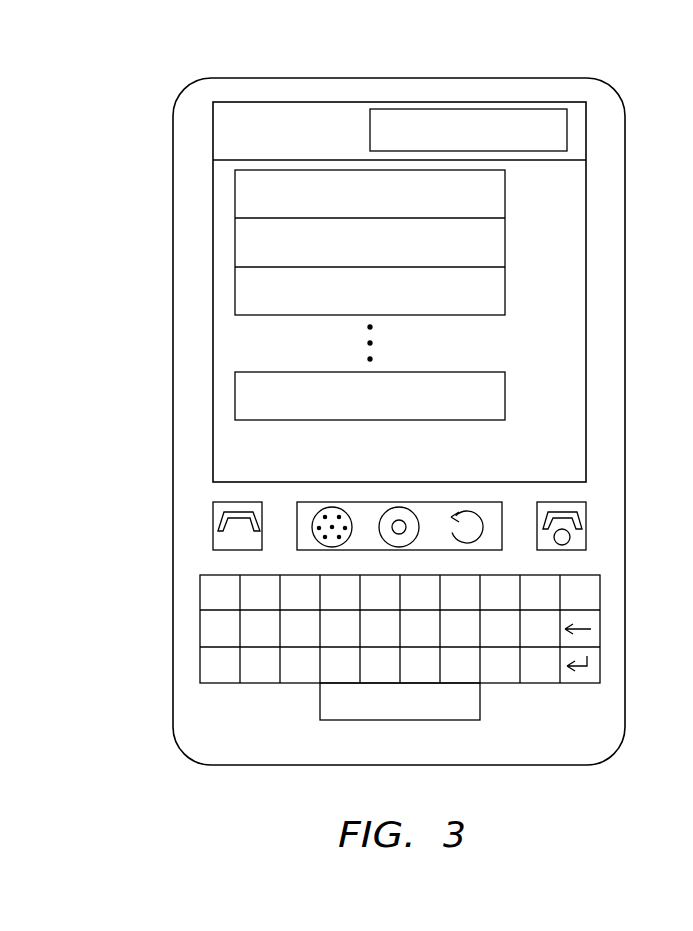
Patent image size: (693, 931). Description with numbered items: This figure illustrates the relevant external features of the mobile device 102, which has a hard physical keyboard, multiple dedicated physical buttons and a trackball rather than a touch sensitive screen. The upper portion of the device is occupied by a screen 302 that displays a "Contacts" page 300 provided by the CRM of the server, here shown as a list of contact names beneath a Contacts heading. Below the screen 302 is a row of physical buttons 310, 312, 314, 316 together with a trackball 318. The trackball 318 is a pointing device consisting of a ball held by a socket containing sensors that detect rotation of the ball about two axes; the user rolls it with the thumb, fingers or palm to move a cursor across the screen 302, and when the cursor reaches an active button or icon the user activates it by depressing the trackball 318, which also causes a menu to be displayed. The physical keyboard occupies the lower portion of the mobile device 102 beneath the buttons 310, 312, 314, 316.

The mobile device 102 is at (565, 78).
The Contacts page 300 is at (567, 201).
The screen 302 is at (223, 214).
The physical button 310 is at (233, 502).
The physical button 312 is at (332, 504).
The trackball 318 is at (400, 505).
The physical button 314 is at (469, 511).
The physical button 316 is at (567, 502).